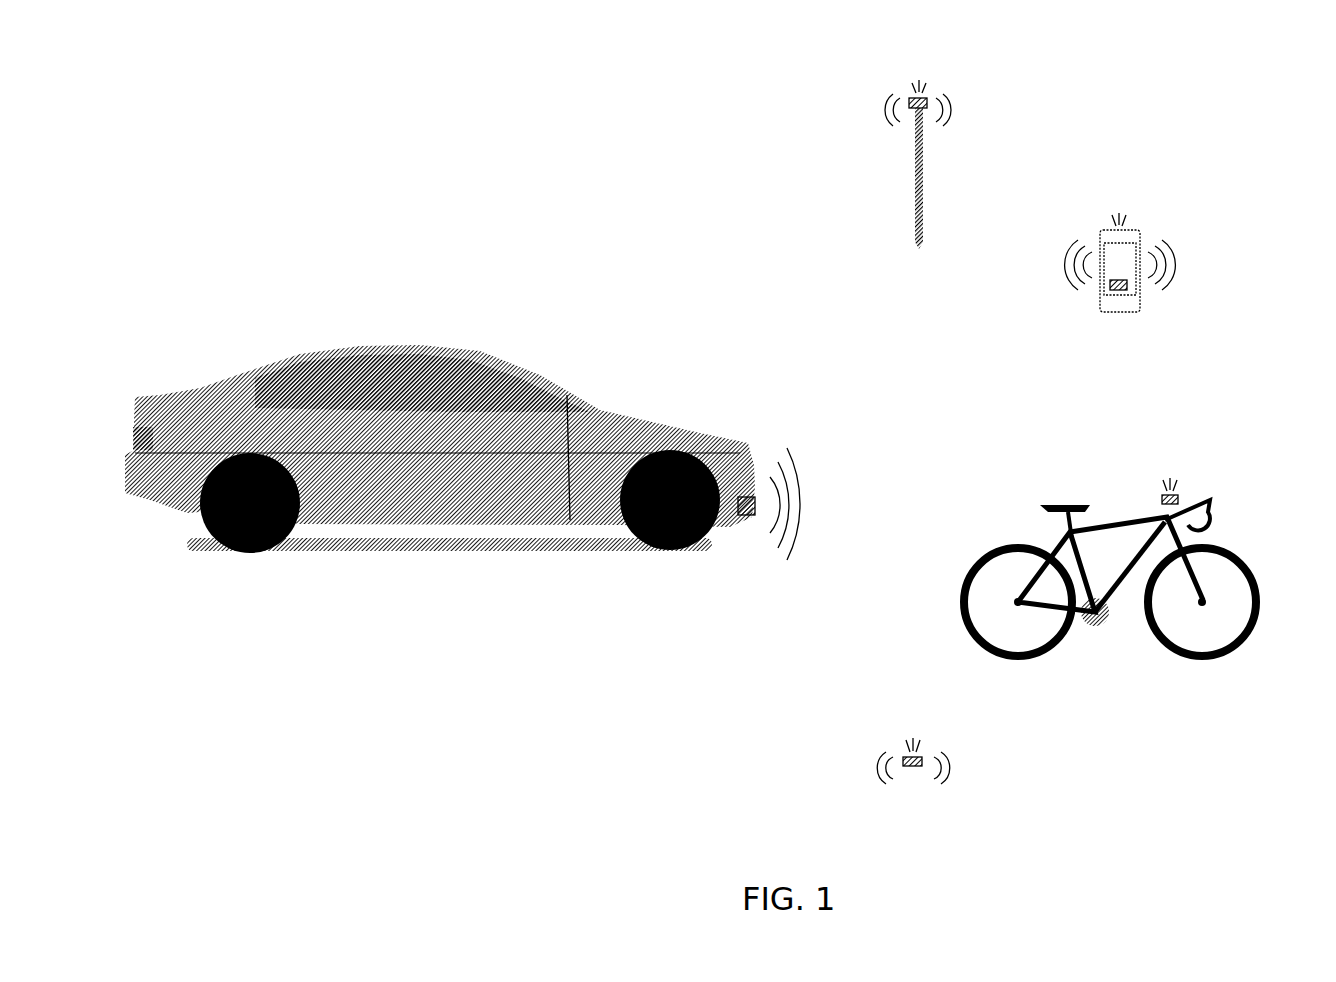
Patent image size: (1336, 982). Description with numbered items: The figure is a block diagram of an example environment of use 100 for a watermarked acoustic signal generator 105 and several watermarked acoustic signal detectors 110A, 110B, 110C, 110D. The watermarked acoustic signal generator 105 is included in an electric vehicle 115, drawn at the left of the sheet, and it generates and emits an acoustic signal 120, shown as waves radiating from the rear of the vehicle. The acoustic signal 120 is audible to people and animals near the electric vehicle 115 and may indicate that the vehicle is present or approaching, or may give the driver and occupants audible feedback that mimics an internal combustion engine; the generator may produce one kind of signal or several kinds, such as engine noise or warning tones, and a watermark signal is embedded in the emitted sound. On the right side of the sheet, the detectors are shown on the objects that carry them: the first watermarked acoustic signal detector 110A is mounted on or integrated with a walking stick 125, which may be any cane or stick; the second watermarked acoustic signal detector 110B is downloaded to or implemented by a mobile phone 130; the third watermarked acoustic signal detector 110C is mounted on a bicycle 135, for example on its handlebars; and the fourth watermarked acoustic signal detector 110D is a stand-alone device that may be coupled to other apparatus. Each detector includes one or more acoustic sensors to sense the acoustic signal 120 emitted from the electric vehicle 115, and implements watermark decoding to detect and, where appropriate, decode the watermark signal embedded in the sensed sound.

The environment of use 100 is at (257, 72).
The watermarked acoustic signal generator 105 is at (750, 517).
The first watermarked acoustic signal detector 110A is at (927, 101).
The second watermarked acoustic signal detector 110B is at (1110, 291).
The third watermarked acoustic signal detector 110C is at (1162, 496).
The fourth watermarked acoustic signal detector 110D is at (925, 757).
The electric vehicle 115 is at (387, 344).
The acoustic signal 120 is at (791, 453).
The walking stick 125 is at (915, 200).
The mobile phone 130 is at (1120, 313).
The bicycle 135 is at (1058, 503).